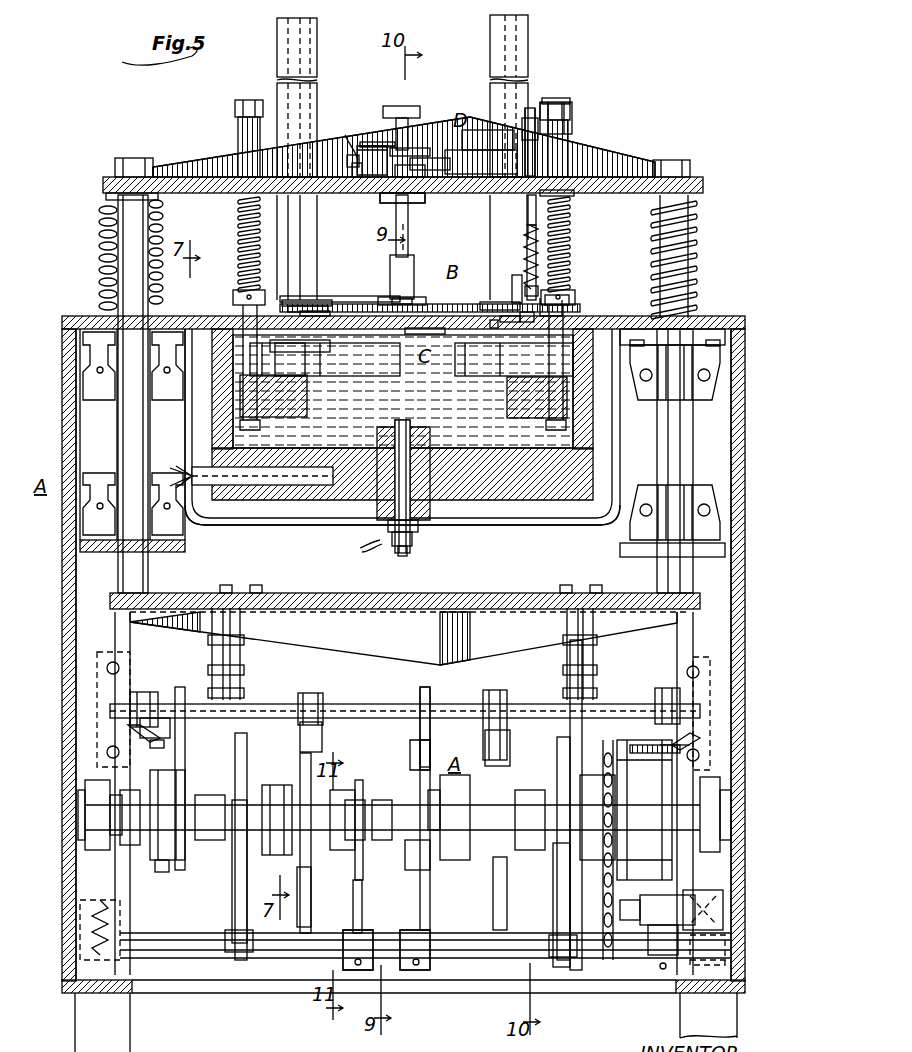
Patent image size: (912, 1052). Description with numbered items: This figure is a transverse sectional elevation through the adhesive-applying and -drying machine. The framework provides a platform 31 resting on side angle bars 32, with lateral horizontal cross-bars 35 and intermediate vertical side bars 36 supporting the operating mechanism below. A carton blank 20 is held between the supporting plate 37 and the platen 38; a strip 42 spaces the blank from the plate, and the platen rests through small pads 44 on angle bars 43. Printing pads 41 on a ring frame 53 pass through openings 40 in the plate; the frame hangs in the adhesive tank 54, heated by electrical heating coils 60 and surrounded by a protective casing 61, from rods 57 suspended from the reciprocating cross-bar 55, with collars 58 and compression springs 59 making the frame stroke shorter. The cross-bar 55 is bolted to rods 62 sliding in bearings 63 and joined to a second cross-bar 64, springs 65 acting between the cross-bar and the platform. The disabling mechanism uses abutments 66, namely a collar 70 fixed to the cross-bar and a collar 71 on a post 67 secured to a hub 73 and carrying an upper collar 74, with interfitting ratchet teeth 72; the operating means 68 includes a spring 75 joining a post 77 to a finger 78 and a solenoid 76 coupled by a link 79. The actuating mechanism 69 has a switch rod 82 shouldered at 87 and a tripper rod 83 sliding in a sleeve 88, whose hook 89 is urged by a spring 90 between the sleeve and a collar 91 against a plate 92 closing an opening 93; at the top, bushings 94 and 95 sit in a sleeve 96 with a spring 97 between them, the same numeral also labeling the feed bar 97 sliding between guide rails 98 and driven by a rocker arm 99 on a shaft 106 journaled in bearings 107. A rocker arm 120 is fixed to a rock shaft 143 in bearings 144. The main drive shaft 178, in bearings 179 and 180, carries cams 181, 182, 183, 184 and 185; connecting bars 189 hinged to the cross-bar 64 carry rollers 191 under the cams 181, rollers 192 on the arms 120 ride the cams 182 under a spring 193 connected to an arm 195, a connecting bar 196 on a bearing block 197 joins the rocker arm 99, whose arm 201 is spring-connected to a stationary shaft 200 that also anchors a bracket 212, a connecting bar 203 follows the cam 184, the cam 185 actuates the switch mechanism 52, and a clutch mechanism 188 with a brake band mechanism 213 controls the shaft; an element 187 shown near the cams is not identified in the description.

The carton blank 20 is at (366, 304).
The platform 31 is at (176, 317).
The side angle bars 32 is at (62, 351).
The lateral horizontal cross-bars 35 is at (86, 994).
The intermediate vertical side bars 36 is at (736, 631).
The supporting plate 37 is at (395, 355).
The platen 38 is at (332, 305).
The openings 40 is at (335, 337).
The printing pads 41 is at (282, 363).
The strip 42 is at (302, 311).
The angle bars 43 is at (280, 297).
The small pads 44 is at (288, 301).
The switch mechanism 52 is at (369, 804).
The frame 53 is at (310, 397).
The adhesive tank 54 is at (580, 401).
The reciprocating cross-bar 55 is at (208, 166).
The rods 57 is at (238, 301).
The collars 58 is at (560, 299).
The compression springs 59 is at (563, 233).
The electrical heating coils 60 is at (298, 481).
The protective casing 61 is at (542, 527).
The rods 62 is at (118, 247).
The bearings 63 is at (104, 488).
The second cross-bar 64 is at (310, 601).
The springs 65 is at (156, 221).
The relatively shiftable abutments 66 is at (413, 171).
The post 67 is at (393, 131).
The operating means 68 is at (430, 149).
The actuating mechanism 69 is at (518, 257).
The collar 70 is at (385, 201).
The collar 71 is at (350, 133).
The ratchet teeth 72 is at (348, 161).
The hub 73 is at (406, 265).
The collar 74 is at (406, 111).
The spring 75 is at (382, 145).
The solenoid 76 is at (478, 148).
The post 77 is at (352, 171).
The finger 78 is at (408, 151).
The link 79 is at (425, 198).
The switch rod 82 is at (514, 279).
The tripper rod 83 is at (526, 269).
The shoulder 87 is at (508, 301).
The sleeve 88 is at (537, 201).
The hook 89 is at (538, 307).
The spring 90 is at (524, 241).
The collar 91 is at (560, 287).
The plate 92 is at (526, 323).
The opening 93 is at (520, 350).
The bushing 94 is at (558, 135).
The bushing 95 is at (529, 113).
The sleeve 96 is at (558, 117).
The spring / feed bar 97 is at (522, 129).
The guide rails 98 is at (403, 300).
The rocker arm 99 is at (428, 899).
The shaft 106 is at (466, 961).
The bearings 107 is at (126, 957).
The rocker arm 120 is at (306, 701).
The rocker shaft 143 is at (386, 705).
The bearings 144 is at (97, 656).
The main drive shaft 178 is at (280, 801).
The bearing 179 is at (85, 810).
The bearing 180 is at (718, 815).
The cams 181 is at (244, 751).
The cams 182 is at (308, 915).
The cam 183 is at (410, 753).
The cam 184 is at (158, 875).
The cam 185 is at (356, 781).
The rack 187 is at (553, 915).
The clutch mechanism 188 is at (637, 850).
The connecting bars 189 is at (220, 766).
The roller 191 is at (234, 956).
The rollers 192 is at (304, 695).
The spring 193 is at (156, 741).
The arm 195 is at (130, 713).
The connecting bar 196 is at (428, 859).
The bearing block 197 is at (434, 807).
The stationary shaft 200 is at (338, 956).
The arm 201 is at (720, 913).
The connecting bar 203 is at (180, 687).
The bracket 212 is at (368, 893).
The brake band mechanism 213 is at (638, 941).